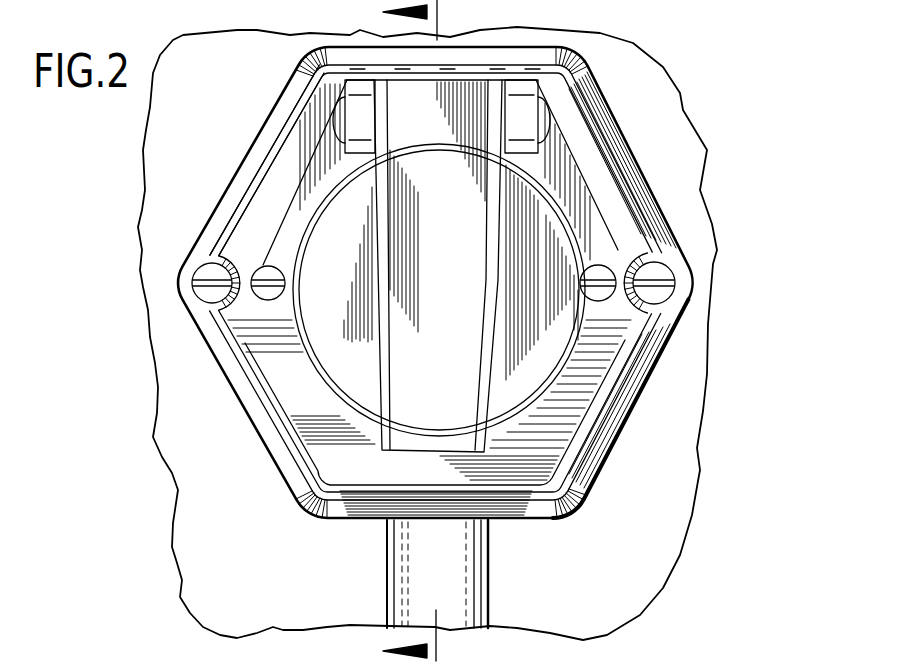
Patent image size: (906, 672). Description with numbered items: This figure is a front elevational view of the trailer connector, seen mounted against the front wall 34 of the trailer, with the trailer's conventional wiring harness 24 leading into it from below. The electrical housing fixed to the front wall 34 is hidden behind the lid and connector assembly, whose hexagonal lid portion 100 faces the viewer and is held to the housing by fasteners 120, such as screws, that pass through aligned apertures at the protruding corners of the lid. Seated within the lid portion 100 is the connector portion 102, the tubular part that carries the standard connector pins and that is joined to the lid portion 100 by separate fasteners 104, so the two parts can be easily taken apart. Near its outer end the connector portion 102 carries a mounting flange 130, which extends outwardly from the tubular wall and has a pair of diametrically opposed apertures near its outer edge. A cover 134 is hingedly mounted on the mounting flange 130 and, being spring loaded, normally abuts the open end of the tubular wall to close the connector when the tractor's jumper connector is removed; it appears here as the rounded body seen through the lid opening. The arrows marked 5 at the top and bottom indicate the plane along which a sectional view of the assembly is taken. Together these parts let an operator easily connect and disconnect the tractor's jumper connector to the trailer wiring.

The wiring harness 24 is at (452, 575).
The front wall 34 is at (663, 528).
The lid portion 100 is at (570, 397).
The connector portion 102 is at (592, 228).
The fasteners 104 is at (603, 292).
The fasteners 120 is at (665, 268).
The mounting flange 130 is at (297, 187).
The cover 134 is at (540, 227).
The section line 5- 5 is at (426, 333).